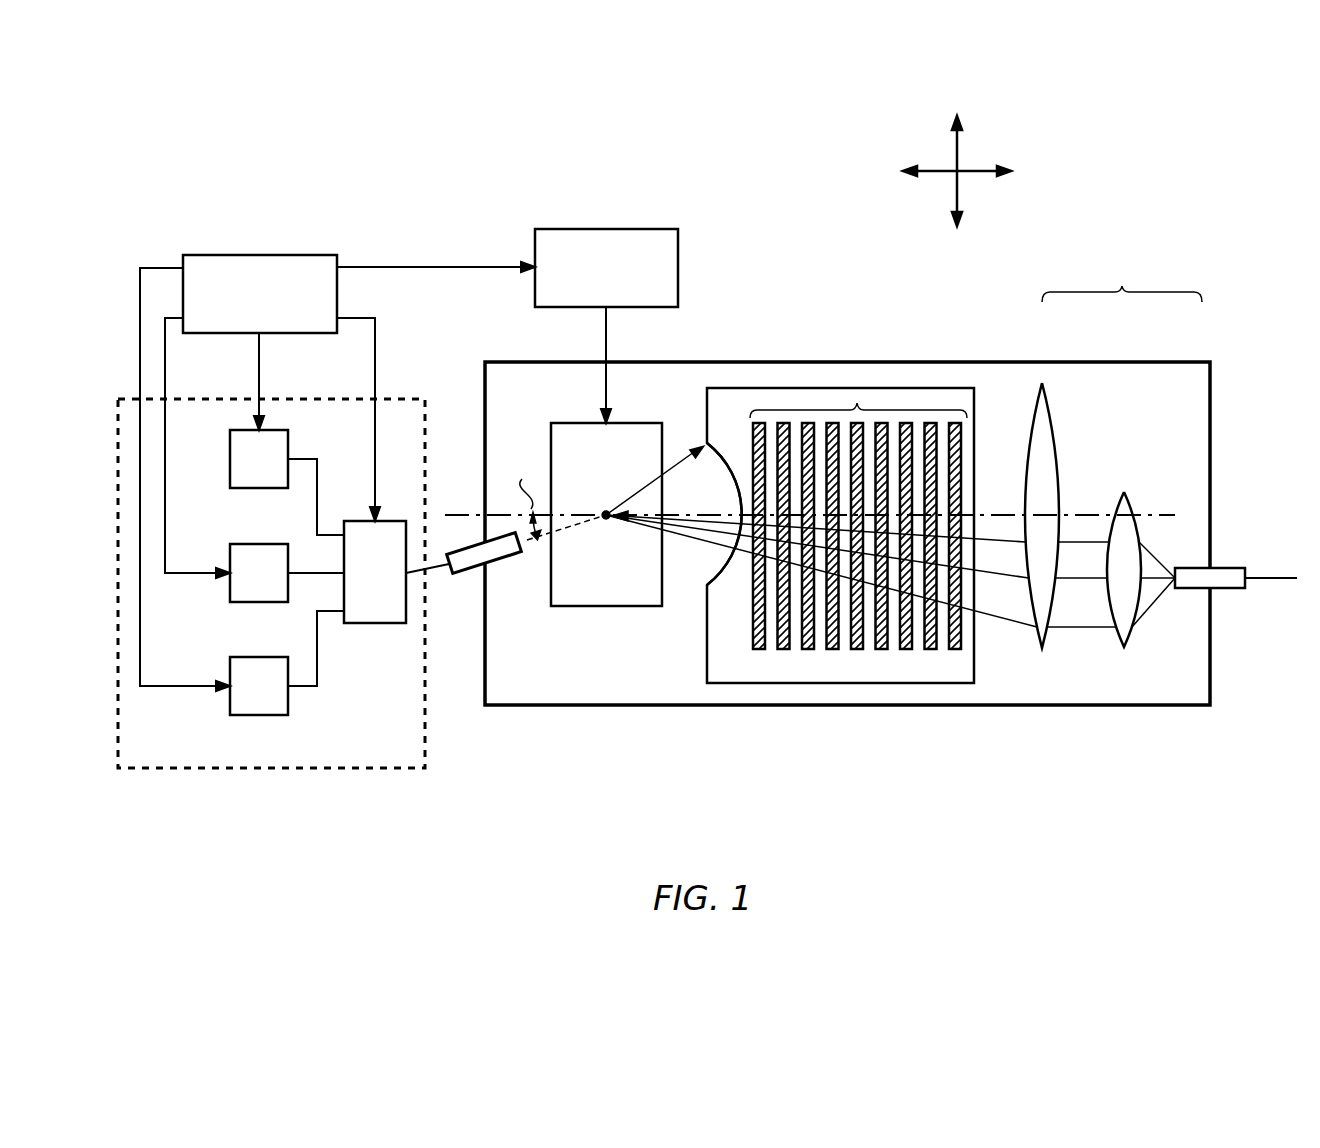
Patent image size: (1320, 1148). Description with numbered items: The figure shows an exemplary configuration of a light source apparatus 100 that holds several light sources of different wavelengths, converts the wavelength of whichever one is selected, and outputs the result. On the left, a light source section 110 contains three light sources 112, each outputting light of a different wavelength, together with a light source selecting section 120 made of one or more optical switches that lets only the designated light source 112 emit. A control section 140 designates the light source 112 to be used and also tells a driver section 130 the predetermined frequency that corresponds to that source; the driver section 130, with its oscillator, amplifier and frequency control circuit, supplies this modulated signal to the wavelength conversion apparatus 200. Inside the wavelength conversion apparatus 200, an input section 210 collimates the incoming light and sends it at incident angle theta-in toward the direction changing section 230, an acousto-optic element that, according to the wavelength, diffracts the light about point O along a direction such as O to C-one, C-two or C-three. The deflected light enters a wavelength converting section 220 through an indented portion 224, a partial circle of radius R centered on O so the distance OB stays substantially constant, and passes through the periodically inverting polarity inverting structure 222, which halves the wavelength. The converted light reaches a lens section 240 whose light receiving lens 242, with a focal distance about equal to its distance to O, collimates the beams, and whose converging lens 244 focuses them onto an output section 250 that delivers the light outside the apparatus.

The light source apparatus 100 is at (688, 864).
The light source section 110 is at (274, 769).
The light source 112 is at (256, 488).
The light source selecting section 120 is at (376, 623).
The driver section 130 is at (610, 229).
The control section 140 is at (262, 255).
The wavelength conversion apparatus 200 is at (1210, 403).
The input section 210 is at (469, 568).
The wavelength converting section 220 is at (772, 388).
The polarity inverting structure 222 is at (857, 403).
The indented portion 224 is at (707, 565).
The direction changing section 230 is at (576, 606).
The lens section 240 is at (1113, 453).
The light receiving lens 242 is at (1042, 383).
The converging lens 244 is at (1124, 492).
The output section 250 is at (1228, 568).